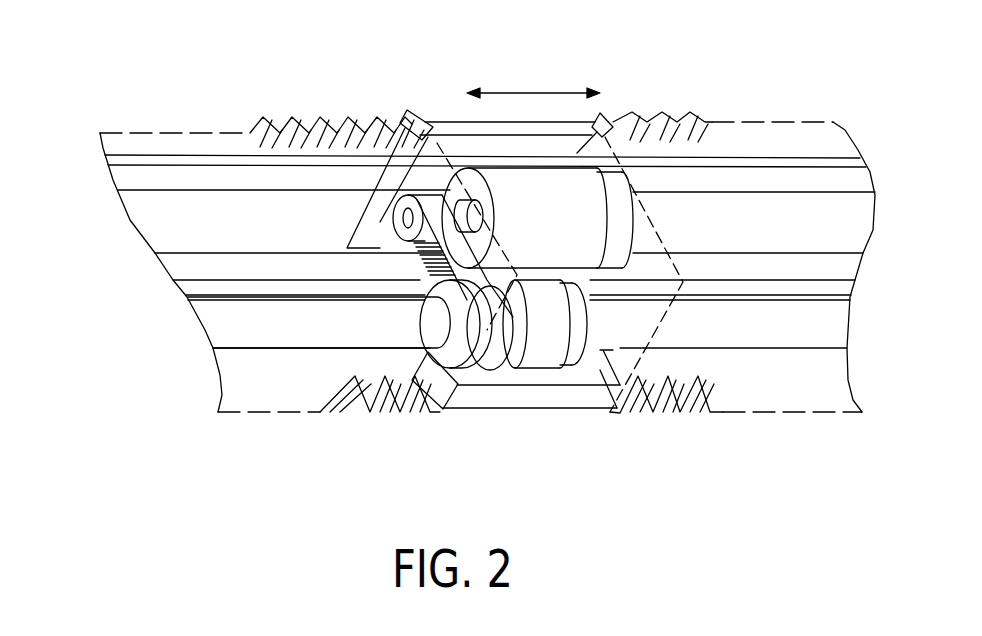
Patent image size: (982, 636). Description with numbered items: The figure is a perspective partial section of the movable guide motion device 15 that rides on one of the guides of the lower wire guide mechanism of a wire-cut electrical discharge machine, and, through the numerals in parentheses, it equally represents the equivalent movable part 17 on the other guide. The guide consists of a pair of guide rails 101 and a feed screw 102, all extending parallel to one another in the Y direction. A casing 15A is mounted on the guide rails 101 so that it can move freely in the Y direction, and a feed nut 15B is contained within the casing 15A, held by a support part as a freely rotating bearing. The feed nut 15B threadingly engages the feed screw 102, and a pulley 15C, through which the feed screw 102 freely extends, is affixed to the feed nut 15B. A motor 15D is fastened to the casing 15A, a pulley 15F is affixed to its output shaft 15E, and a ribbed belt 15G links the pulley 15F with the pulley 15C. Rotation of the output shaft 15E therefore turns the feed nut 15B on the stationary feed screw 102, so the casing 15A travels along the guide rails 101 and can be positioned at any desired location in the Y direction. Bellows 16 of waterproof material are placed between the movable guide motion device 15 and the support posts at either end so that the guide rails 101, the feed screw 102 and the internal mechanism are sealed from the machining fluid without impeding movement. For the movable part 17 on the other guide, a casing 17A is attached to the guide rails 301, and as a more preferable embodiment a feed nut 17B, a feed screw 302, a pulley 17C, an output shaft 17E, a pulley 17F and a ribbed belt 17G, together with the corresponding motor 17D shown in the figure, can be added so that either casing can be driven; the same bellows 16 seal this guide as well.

The movable guide motion device 15 is at (448, 293).
The movable part 17 is at (451, 312).
The casing 15A is at (610, 123).
The casing 17A is at (616, 90).
The feed nut 15B is at (543, 357).
The feed nut 17B is at (532, 387).
The pulley 15C is at (435, 372).
The pulley 17C is at (438, 387).
The motor 15D is at (530, 185).
The roller (alternate embodiment) 17D is at (531, 148).
The output shaft 15E is at (410, 130).
The output shaft 17E is at (397, 90).
The pulley 15F is at (392, 200).
The pulley 17F is at (362, 224).
The ribbed belt 15G is at (450, 247).
The ribbed belt 17G is at (336, 306).
The bellows 16 is at (282, 120).
The guide rails 101 is at (165, 177).
The guide rails 301 is at (465, 237).
The feed screw 102 is at (218, 320).
The feed screw 302 is at (268, 345).
The Y direction Y is at (533, 80).